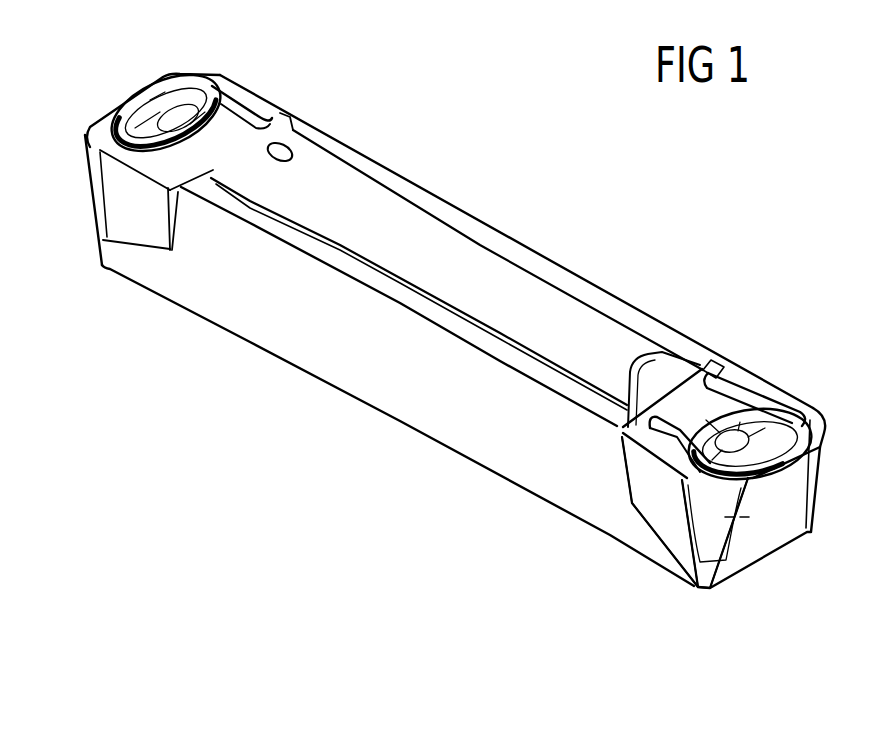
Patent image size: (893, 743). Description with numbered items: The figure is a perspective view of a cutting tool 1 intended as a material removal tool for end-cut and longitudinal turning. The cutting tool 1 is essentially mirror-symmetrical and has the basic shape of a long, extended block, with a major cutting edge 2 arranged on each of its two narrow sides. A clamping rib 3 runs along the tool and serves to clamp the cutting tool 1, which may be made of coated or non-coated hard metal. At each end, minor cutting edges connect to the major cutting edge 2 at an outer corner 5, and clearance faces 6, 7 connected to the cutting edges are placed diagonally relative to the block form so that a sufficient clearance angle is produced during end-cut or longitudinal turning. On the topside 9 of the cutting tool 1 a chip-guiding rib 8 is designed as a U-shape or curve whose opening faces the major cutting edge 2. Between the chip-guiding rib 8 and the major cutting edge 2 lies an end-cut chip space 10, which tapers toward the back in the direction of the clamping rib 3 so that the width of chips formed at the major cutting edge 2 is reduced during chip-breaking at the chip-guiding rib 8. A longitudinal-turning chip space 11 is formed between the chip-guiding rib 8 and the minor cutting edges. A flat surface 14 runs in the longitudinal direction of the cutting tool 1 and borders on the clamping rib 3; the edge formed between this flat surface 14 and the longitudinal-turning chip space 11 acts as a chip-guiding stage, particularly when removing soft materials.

The cutting tool 1 is at (333, 422).
The major cutting edge 2 is at (120, 112).
The clamping rib 3 is at (585, 295).
The outer corner 5 is at (693, 500).
The clearance face 6 is at (761, 512).
The clearance face 7 is at (658, 513).
The chip-guiding rib 8 is at (783, 403).
The topside 9 is at (535, 205).
The end-cut chip space 10 is at (155, 110).
The longitudinal-turning chip space 11 is at (660, 453).
The flat surface 14 is at (638, 322).